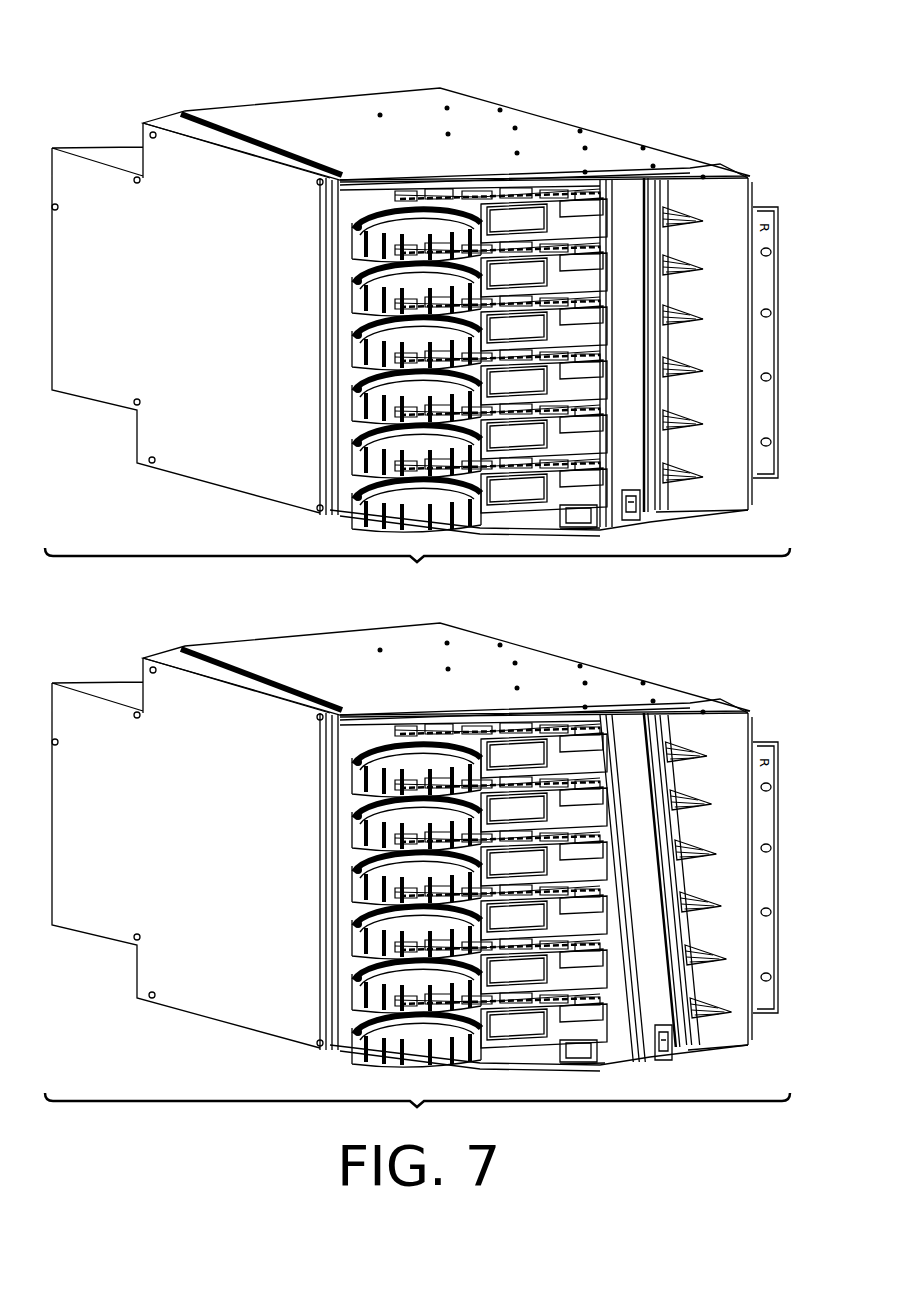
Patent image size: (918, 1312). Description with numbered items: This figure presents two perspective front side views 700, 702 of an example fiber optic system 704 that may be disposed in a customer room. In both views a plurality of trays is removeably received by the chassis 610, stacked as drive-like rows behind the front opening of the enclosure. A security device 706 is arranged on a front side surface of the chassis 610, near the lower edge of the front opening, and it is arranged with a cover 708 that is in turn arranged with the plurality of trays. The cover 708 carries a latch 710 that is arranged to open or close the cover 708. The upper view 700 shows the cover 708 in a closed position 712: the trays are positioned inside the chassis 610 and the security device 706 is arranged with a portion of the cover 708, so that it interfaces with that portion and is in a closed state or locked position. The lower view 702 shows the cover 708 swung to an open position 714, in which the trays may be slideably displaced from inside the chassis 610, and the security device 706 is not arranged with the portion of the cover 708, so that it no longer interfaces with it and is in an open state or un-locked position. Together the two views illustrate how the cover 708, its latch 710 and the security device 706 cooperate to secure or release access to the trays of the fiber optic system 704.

The fiber optic system 704 is at (126, 73).
The chassis 610 is at (245, 108).
The security device 706 is at (562, 518).
The cover 708 is at (650, 515).
The latch 710 is at (633, 505).
The closed position 712 is at (598, 528).
The open position 714 is at (602, 1067).
The perspective front side view 700 is at (417, 569).
The perspective front side view 702 is at (417, 1113).